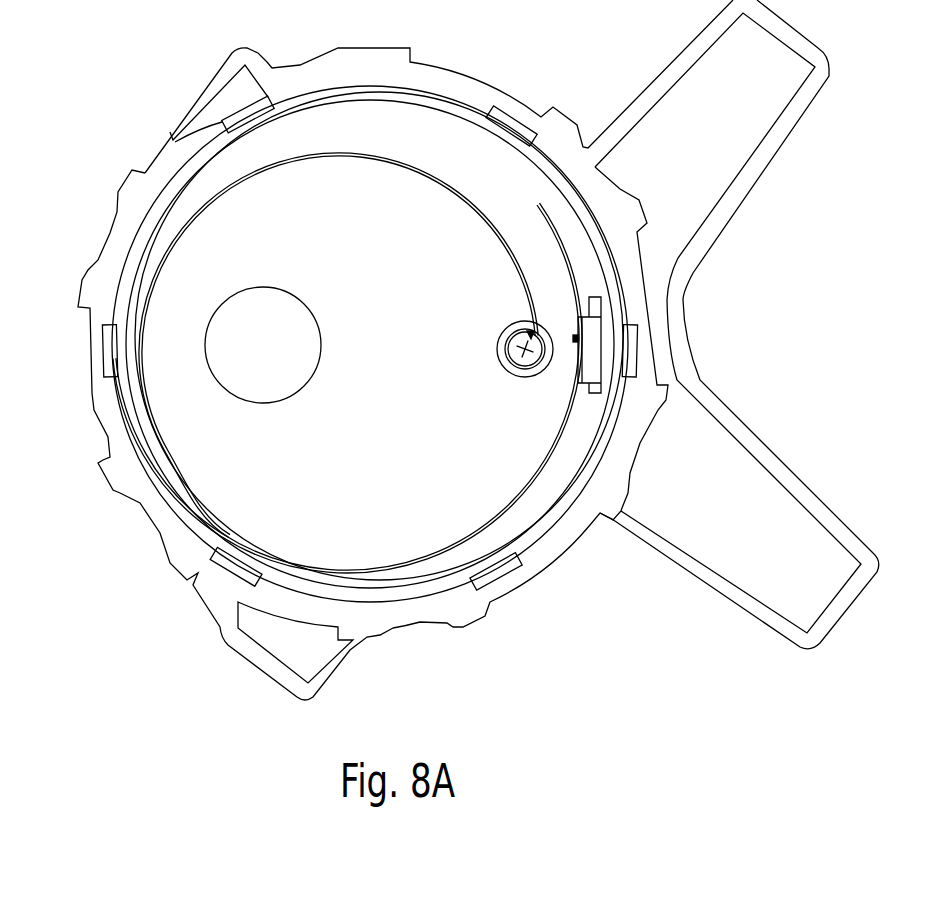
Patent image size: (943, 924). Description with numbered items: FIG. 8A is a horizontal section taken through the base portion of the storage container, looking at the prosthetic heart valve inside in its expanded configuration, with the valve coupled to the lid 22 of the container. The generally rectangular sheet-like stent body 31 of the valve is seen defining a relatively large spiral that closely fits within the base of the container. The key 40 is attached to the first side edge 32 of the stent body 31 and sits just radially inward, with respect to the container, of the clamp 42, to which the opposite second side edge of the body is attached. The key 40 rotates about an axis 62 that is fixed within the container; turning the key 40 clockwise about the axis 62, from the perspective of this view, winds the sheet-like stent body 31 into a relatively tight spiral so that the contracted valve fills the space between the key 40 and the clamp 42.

The lid 22 is at (142, 507).
The sheet-like stent body 31 is at (147, 413).
The first side edge 32 is at (532, 333).
The key 40 is at (535, 367).
The clamp 42 is at (603, 315).
The axis 62 is at (523, 347).